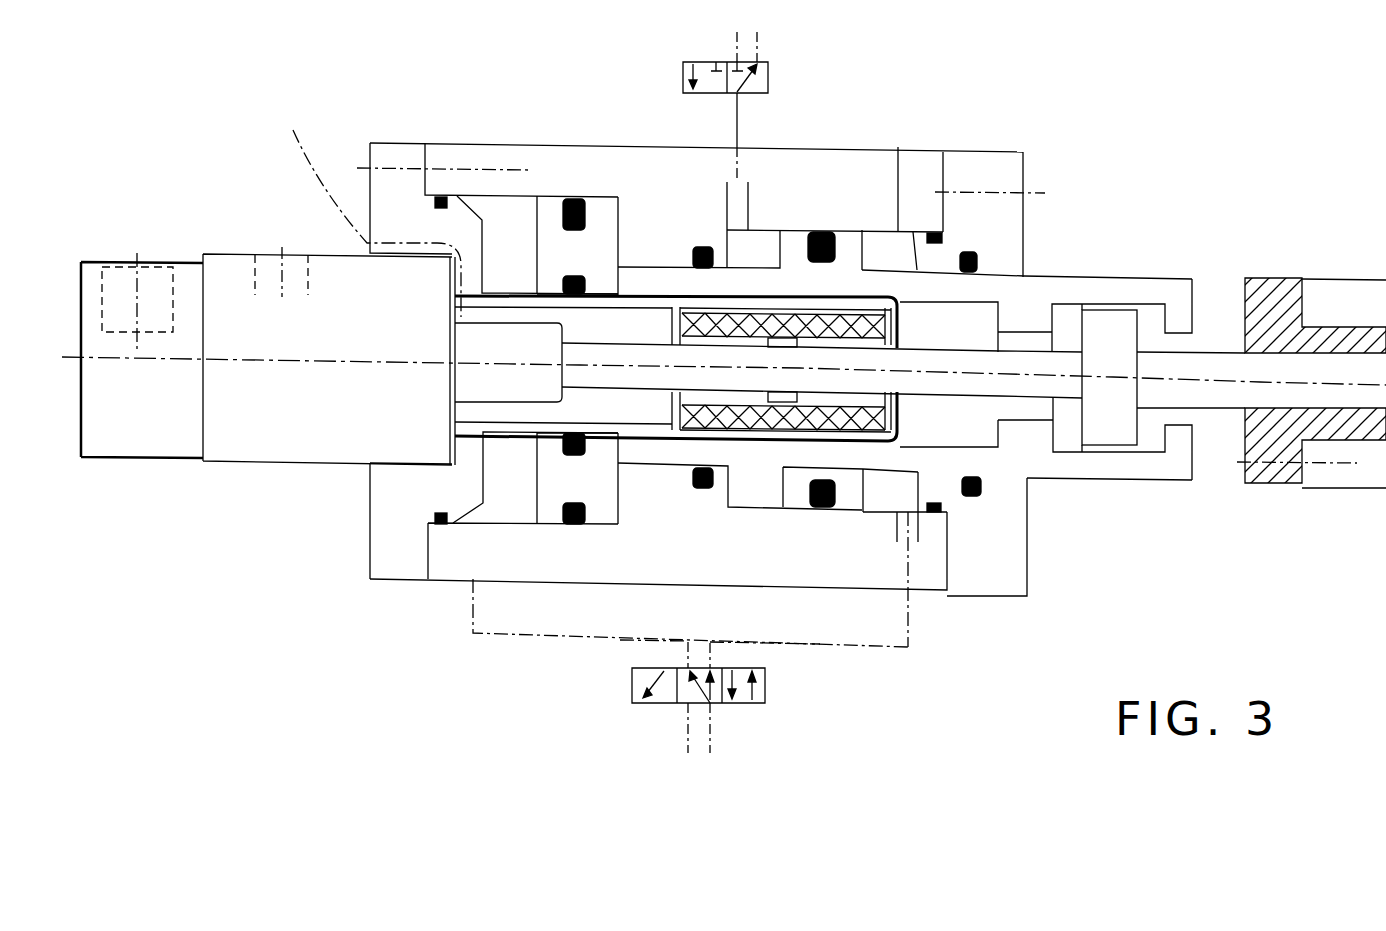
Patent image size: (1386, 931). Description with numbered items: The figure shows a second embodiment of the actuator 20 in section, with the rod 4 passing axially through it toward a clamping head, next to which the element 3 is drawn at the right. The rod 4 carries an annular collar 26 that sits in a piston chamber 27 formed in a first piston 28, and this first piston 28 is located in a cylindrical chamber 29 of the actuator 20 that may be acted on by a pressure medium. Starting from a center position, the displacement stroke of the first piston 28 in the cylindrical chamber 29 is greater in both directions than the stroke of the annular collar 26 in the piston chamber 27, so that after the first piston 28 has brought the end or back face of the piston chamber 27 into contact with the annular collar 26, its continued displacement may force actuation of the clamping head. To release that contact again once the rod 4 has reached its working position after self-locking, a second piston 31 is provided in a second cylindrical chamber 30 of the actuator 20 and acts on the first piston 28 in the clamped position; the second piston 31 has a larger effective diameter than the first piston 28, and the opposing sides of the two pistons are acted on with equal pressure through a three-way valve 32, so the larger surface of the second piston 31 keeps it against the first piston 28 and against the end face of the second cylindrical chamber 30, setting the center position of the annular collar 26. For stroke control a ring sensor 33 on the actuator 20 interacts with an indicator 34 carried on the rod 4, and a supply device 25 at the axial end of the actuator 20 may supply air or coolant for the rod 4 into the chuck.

The coupling member 3 is at (1330, 462).
The rod 4 is at (1235, 395).
The actuator 20 is at (336, 642).
The supply device 25 is at (283, 440).
The annular collar 26 is at (1110, 326).
The piston chamber 27 is at (1152, 323).
The first piston 28 is at (852, 498).
The cylindrical chamber 29 is at (892, 495).
The second cylindrical chamber 30 is at (513, 503).
The second piston 31 is at (607, 515).
The three-way valve 32 is at (740, 703).
The ring sensor 33 is at (855, 315).
The indicator 34 is at (787, 343).